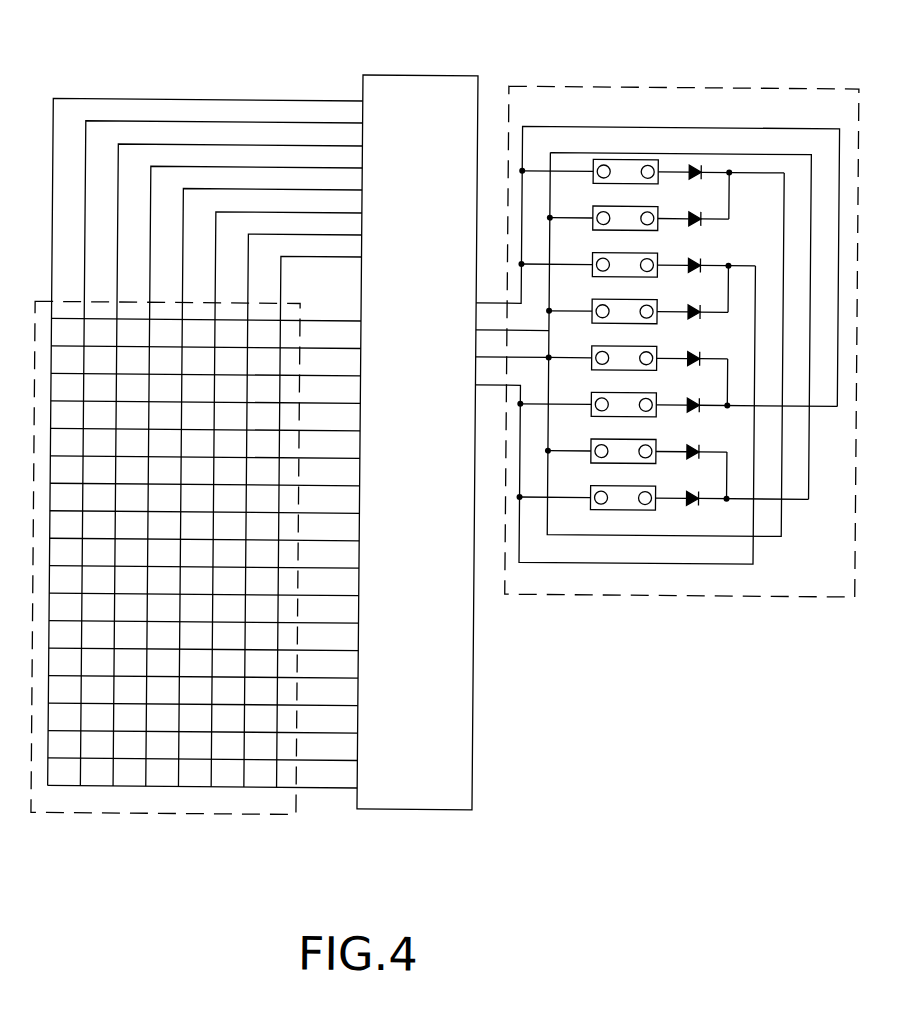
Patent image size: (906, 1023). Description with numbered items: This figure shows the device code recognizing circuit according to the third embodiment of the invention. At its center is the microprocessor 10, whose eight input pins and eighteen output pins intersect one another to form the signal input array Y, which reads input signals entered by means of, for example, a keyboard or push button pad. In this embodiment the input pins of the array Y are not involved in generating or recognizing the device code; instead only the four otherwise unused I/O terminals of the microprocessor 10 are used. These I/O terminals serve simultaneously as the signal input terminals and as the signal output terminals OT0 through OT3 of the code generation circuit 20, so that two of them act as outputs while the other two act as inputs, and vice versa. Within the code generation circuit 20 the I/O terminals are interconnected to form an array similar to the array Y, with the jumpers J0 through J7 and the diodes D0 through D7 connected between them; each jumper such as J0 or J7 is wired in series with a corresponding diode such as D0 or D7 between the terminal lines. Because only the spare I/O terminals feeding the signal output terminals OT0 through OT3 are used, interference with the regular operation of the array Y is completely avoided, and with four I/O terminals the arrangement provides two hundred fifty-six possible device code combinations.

The microprocessor 10 is at (470, 727).
The code generation circuit 20 is at (666, 336).
The signal input array Y is at (144, 800).
The signal output terminal OT0 is at (497, 301).
The signal output terminal OT3 is at (496, 386).
The jumper J0 is at (629, 175).
The jumper J7 is at (637, 508).
The diode D0 is at (703, 167).
The diode D7 is at (696, 502).